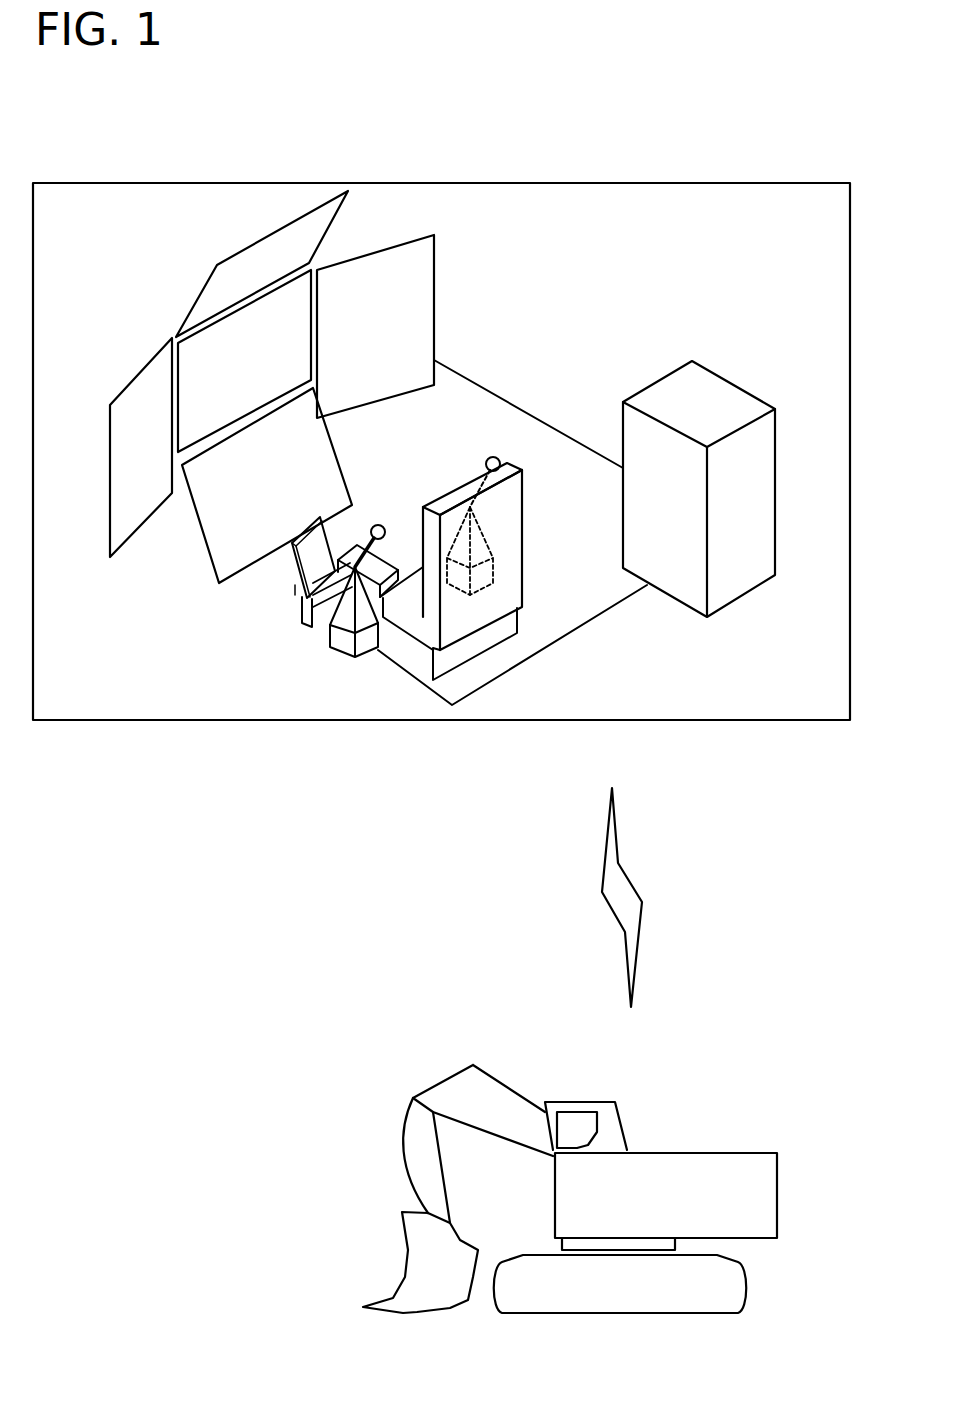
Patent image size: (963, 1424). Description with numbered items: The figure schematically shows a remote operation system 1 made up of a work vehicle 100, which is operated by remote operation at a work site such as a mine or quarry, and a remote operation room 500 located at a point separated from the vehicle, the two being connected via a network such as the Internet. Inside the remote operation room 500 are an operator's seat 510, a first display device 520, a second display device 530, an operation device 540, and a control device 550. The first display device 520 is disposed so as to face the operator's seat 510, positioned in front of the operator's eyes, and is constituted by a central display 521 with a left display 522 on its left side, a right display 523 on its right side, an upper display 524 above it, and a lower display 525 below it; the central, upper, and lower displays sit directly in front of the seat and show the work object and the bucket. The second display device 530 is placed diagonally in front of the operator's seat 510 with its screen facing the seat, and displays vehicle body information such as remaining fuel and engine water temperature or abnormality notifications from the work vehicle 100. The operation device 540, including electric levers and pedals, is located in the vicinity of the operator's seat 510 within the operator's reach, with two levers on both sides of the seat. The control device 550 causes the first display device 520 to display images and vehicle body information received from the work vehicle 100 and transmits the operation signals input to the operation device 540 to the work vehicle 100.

The remote operation system 1 is at (815, 136).
The work vehicle 100 is at (728, 1153).
The remote operation room 500 is at (677, 183).
The operator's seat 510 is at (527, 543).
The first display device 520 is at (127, 271).
The central display 521 is at (182, 366).
The left display 522 is at (124, 467).
The right display 523 is at (434, 298).
The upper display 524 is at (239, 262).
The lower display 525 is at (214, 542).
The second display device 530 is at (296, 570).
The operation device 540 is at (336, 626).
The control device 550 is at (757, 519).